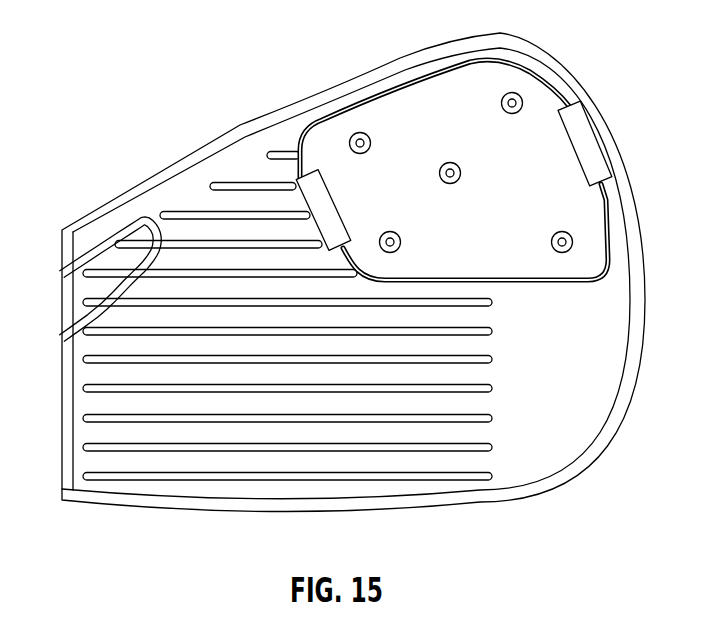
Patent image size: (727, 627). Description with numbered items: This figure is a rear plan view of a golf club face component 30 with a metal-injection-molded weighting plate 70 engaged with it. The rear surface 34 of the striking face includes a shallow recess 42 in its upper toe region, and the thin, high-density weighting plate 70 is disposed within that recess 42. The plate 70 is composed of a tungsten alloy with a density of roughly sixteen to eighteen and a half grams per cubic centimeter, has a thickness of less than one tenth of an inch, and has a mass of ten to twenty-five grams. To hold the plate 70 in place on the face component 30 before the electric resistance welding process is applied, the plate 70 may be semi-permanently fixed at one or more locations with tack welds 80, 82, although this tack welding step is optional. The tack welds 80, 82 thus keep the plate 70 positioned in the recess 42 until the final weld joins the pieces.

The face component 30 is at (378, 272).
The rear surface 34 is at (101, 393).
The shallow recess 42 is at (637, 210).
The weighting plate 70 is at (530, 95).
The tack weld 80 is at (590, 140).
The tack weld 82 is at (300, 170).